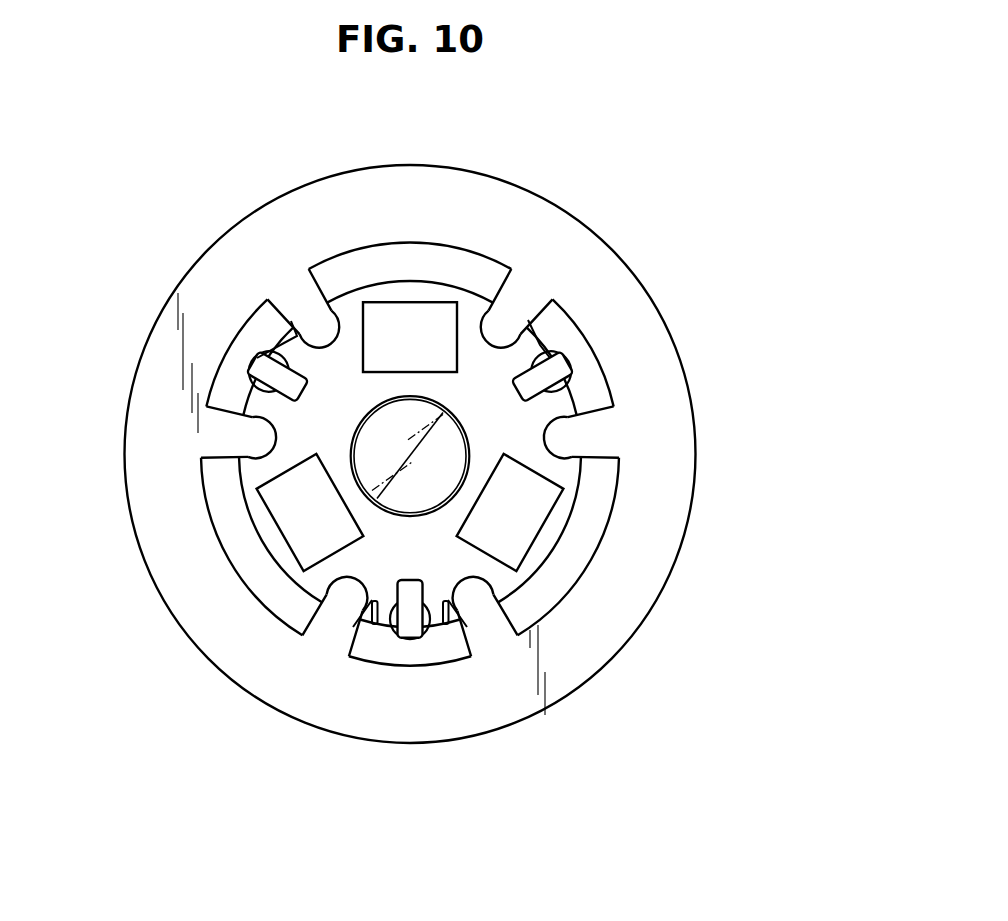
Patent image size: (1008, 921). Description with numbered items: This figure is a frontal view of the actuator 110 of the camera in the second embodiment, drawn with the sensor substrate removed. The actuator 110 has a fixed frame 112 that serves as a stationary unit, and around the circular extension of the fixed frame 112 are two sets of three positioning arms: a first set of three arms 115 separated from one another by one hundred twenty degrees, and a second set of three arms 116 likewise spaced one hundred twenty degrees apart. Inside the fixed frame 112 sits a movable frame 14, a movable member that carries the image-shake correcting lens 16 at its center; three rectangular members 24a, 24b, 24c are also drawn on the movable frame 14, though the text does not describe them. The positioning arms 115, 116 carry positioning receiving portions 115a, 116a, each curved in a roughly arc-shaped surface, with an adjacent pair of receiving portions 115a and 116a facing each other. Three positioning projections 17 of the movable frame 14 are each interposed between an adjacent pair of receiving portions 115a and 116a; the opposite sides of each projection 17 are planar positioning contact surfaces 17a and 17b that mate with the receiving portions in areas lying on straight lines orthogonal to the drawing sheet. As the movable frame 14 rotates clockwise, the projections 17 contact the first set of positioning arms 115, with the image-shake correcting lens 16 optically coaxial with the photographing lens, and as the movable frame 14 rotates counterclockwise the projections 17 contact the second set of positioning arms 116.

The actuator 110 is at (744, 193).
The fixed frame 112 is at (600, 643).
The movable frame 14 is at (473, 320).
The image-shake correcting lens 16 is at (378, 447).
The magnet 24a is at (388, 306).
The magnet 24b is at (290, 525).
The magnet 24c is at (528, 525).
The first set of positioning arms 115 is at (303, 303).
The positioning receiving portion 115a is at (262, 303).
The second set of positioning arms 116 is at (223, 443).
The positioning receiving portion 116a is at (237, 400).
The positioning projection 17 is at (255, 353).
The positioning contact surface 17a is at (288, 341).
The positioning contact surface 17b is at (241, 380).